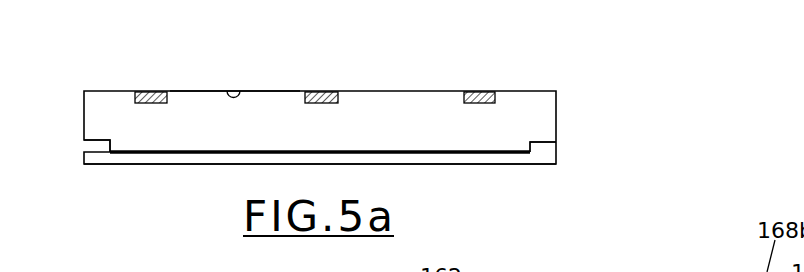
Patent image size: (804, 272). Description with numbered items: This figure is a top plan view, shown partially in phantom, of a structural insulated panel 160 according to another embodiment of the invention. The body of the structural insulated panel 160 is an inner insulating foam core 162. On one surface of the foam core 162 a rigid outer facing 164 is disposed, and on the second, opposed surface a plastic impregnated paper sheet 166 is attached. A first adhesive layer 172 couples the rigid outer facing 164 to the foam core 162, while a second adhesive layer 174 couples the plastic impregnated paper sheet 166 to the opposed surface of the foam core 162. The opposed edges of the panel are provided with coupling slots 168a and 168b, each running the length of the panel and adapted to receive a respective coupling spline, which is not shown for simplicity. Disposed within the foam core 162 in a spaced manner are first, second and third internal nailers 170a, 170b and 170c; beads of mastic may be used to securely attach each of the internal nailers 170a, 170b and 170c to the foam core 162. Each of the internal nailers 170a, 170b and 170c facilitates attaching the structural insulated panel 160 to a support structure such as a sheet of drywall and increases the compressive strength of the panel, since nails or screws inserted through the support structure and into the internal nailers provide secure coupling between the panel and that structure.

The structural insulated panel 160 is at (587, 112).
The inner insulating foam core 162 is at (421, 128).
The rigid outer facing 164 is at (472, 159).
The plastic impregnated paper sheet 166 is at (411, 91).
The coupling slot 168a is at (92, 143).
The coupling slot 168b is at (556, 146).
The first internal nailer 170a is at (147, 92).
The second internal nailer 170b is at (318, 91).
The third internal nailer 170c is at (487, 91).
The first adhesive layer 172 is at (207, 148).
The second adhesive layer 174 is at (226, 91).